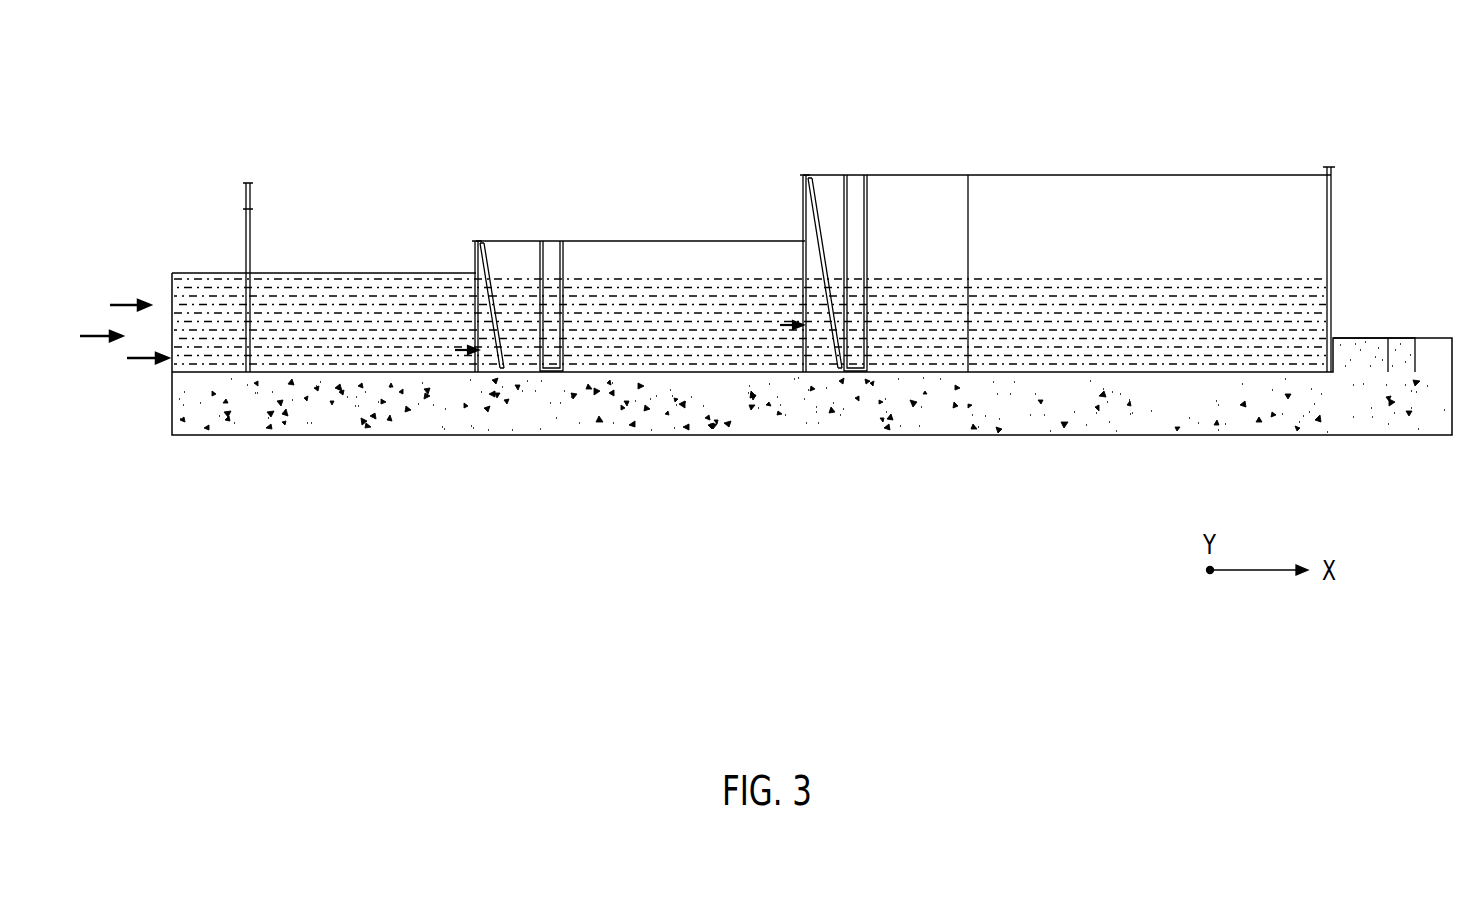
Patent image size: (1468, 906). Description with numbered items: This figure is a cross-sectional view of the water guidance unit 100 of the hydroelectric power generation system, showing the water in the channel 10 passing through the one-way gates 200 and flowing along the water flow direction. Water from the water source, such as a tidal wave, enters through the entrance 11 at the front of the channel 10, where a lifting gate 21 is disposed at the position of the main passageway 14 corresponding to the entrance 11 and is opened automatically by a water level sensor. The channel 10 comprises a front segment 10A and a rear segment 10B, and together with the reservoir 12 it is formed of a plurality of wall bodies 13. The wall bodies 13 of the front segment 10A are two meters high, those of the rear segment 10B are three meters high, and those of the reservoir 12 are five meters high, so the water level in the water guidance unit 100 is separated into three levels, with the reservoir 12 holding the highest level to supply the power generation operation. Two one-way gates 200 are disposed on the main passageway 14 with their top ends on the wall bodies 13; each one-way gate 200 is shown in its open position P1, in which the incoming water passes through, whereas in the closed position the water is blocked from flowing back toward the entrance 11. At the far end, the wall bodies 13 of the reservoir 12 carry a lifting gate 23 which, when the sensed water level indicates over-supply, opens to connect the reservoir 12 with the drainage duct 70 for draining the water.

The water guidance unit 100 is at (763, 116).
The channel 10 is at (489, 234).
The front segment 10A is at (452, 307).
The rear segment 10B is at (518, 300).
The entrance 11 is at (163, 279).
The reservoir 12 is at (1130, 238).
The wall bodies 13 is at (325, 270).
The main passageway 14 is at (661, 300).
The lifting gate 21 is at (246, 250).
The lifting gate 23 is at (1331, 232).
The drainage duct 70 is at (1402, 352).
The one-way gate 200 is at (498, 338).
The open position P1 is at (822, 212).